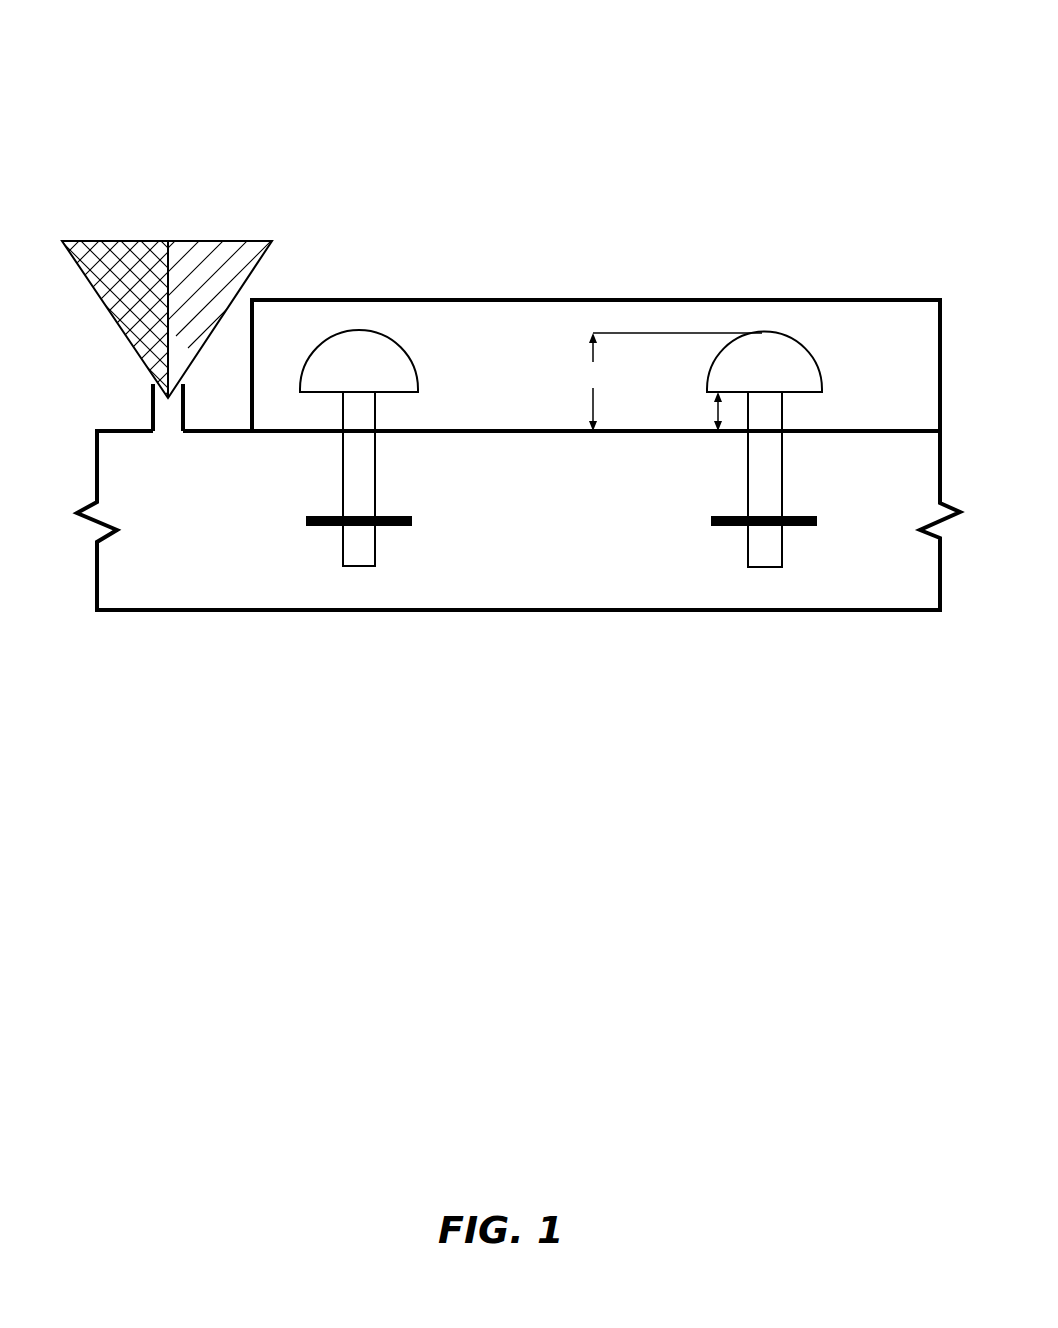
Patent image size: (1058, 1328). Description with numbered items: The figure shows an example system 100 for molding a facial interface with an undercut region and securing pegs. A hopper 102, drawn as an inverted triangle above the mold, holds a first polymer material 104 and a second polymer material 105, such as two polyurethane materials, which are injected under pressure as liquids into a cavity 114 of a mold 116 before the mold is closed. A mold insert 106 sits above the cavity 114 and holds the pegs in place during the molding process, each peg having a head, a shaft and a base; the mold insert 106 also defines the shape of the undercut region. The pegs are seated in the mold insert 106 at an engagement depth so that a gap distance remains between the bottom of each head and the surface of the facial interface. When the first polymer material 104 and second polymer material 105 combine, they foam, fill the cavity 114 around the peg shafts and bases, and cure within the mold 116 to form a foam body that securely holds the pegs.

The system 100 is at (234, 76).
The hopper 102 is at (184, 280).
The first polymer material 104 is at (124, 241).
The second polymer material 105 is at (235, 262).
The mold insert 106 is at (555, 300).
The cavity 114 is at (215, 572).
The mold 116 is at (565, 612).